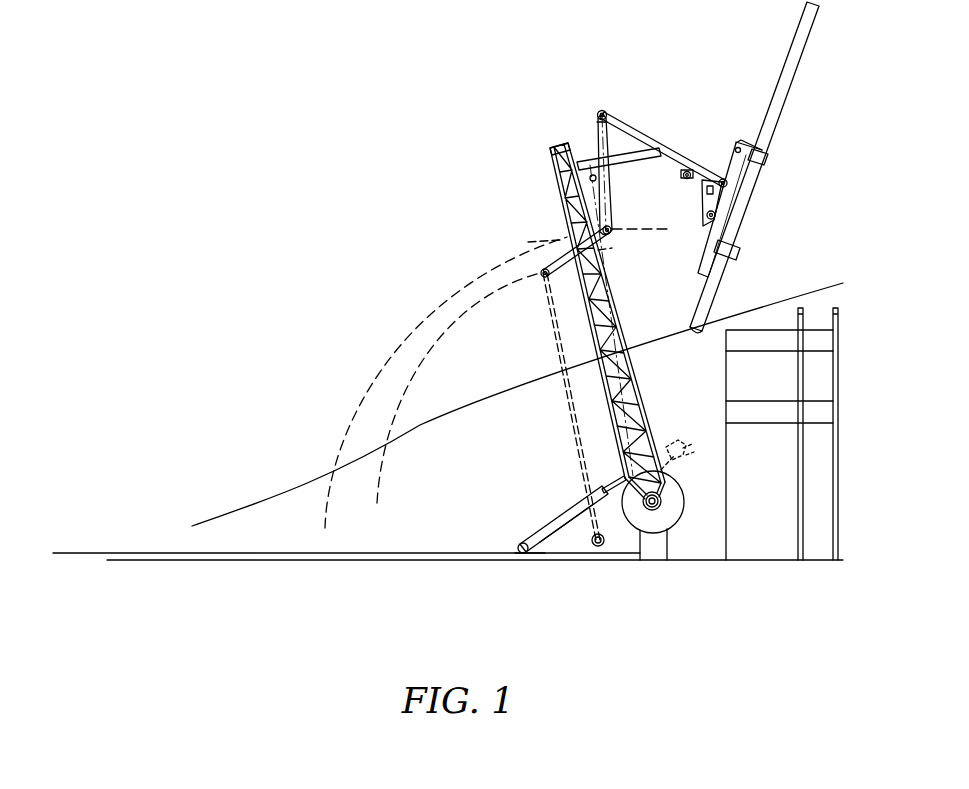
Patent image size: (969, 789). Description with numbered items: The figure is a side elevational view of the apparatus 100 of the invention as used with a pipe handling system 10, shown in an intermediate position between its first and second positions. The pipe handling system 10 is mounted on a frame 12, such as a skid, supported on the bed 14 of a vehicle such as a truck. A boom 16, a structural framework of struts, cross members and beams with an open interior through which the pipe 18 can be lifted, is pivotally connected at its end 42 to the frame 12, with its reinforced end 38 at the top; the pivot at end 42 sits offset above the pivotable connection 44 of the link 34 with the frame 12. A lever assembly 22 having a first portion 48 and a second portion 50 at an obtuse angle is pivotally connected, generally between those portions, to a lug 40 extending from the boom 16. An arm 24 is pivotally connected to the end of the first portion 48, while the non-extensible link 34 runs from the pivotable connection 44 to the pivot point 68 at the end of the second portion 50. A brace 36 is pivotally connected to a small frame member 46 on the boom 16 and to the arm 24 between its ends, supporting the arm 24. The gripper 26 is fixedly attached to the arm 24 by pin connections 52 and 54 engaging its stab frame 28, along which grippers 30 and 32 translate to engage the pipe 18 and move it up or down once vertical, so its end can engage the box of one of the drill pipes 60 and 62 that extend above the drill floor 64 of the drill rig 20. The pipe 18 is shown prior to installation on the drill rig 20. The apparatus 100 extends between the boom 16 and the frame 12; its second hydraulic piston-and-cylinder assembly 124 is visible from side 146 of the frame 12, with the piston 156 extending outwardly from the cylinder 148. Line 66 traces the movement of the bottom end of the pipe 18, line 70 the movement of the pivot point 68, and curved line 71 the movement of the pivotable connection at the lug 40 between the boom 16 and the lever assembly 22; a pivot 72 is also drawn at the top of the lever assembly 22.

The pipe handling system 10 is at (383, 199).
The frame 12 is at (90, 552).
The bed 14 is at (127, 562).
The boom 16 is at (622, 336).
The pipe 18 is at (800, 50).
The drill rig 20 is at (820, 320).
The lever assembly 22 is at (609, 196).
The arm 24 is at (618, 125).
The gripper 26 is at (745, 140).
The stab frame 28 is at (705, 232).
The gripper 30 is at (767, 155).
The gripper 32 is at (737, 256).
The link 34 is at (548, 320).
The brace 36 is at (617, 165).
The end 38 is at (550, 147).
The lug 40 is at (611, 232).
The end 42 is at (660, 507).
The pivotable connection 44 is at (604, 548).
The small frame member 46 is at (580, 160).
The first portion 48 is at (596, 125).
The second portion 50 is at (548, 267).
The pin connection 52 is at (727, 155).
The pin connection 54 is at (707, 219).
The drill pipe 60 is at (798, 384).
The drill pipe 62 is at (838, 388).
The drill floor 64 is at (775, 329).
The line 66 is at (290, 487).
The pivot point 68 is at (543, 278).
The line 70 is at (372, 387).
The curved line 71 is at (420, 360).
The pivot 72 is at (604, 111).
The apparatus 100 is at (560, 501).
The second hydraulic piston-and-cylinder assembly 124 is at (541, 556).
The side 146 is at (512, 561).
The cylinder 148 is at (523, 540).
The piston 156 is at (624, 466).